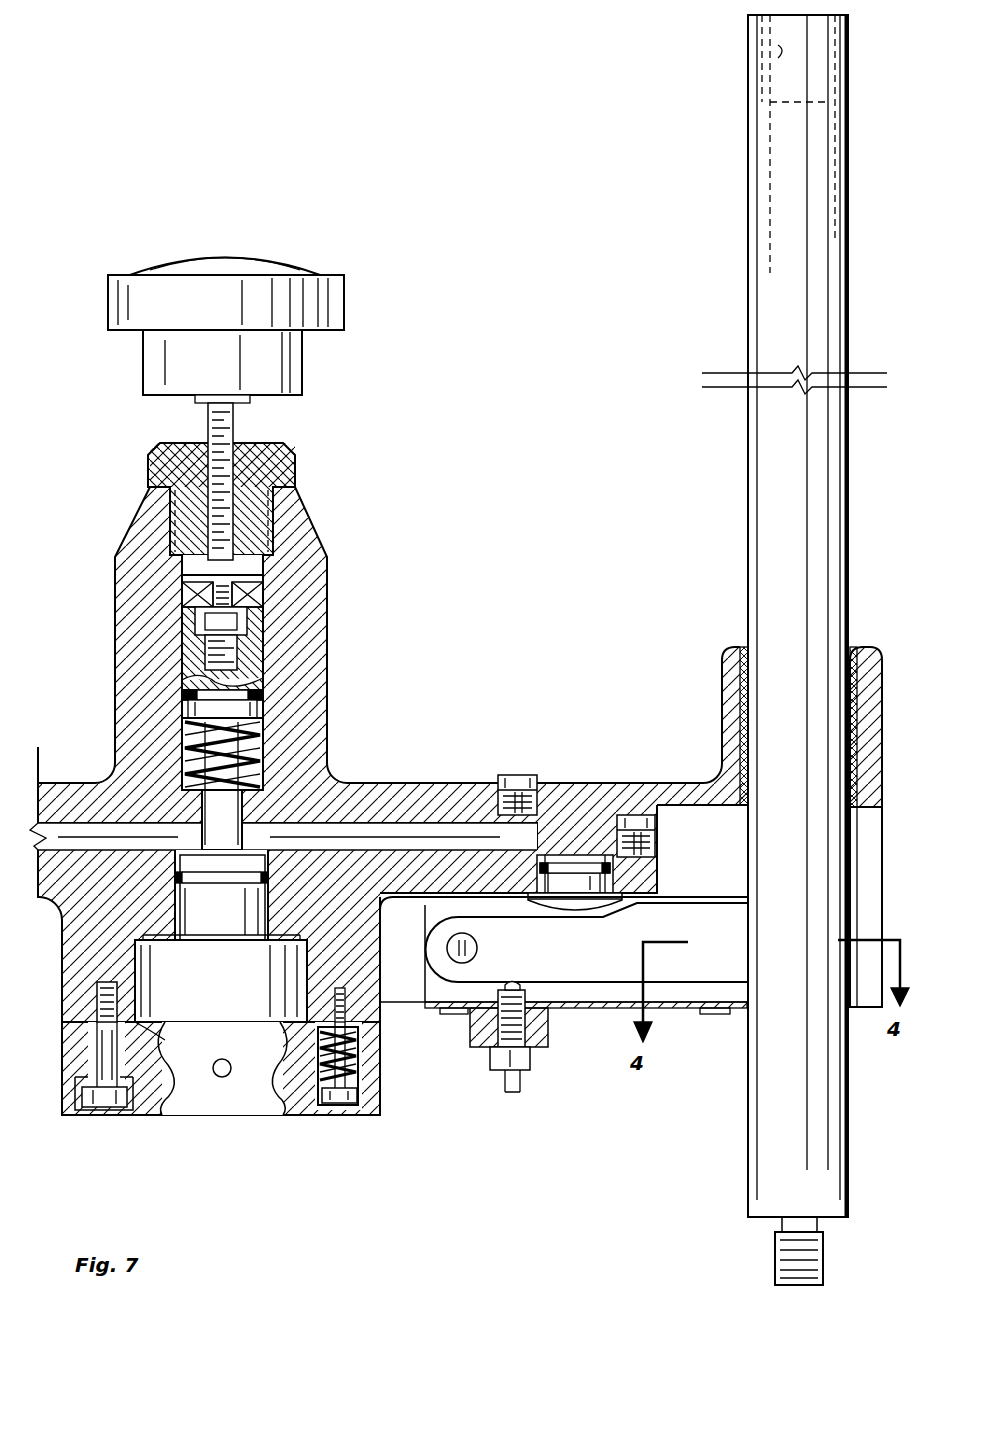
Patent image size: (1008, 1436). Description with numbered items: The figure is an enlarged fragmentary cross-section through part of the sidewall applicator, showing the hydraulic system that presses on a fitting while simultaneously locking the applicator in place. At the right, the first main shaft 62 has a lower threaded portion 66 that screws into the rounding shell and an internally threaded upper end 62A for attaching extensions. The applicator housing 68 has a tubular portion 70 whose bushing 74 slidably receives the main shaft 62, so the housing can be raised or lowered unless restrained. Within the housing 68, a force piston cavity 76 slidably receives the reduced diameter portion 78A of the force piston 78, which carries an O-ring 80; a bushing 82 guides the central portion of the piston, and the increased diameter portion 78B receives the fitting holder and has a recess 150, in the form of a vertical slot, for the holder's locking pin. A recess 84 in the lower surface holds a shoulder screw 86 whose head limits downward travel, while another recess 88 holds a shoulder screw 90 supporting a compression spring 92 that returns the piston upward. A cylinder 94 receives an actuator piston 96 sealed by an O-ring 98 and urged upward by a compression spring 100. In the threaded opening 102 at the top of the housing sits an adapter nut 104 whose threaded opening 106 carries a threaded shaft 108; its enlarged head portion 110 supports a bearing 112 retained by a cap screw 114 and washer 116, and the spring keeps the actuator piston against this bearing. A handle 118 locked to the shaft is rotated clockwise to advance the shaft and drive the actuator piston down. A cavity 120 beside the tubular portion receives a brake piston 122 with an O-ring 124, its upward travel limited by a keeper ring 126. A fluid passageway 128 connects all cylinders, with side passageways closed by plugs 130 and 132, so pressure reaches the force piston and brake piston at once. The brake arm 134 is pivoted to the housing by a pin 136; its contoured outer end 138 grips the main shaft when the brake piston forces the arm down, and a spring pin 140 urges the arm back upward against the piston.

The first main shaft 62 is at (768, 290).
The internally threaded upper end 62A is at (765, 45).
The lower threaded portion 66 is at (782, 1268).
The applicator housing 68 is at (415, 790).
The tubular portion 70 is at (730, 700).
The bushing 74 is at (742, 650).
The force piston cavity 76 is at (165, 925).
The force piston 78 is at (225, 1005).
The reduced diameter portion 78A is at (200, 935).
The increased diameter portion 78B is at (383, 1120).
The O-ring 80 is at (192, 880).
The bushing 82 is at (160, 962).
The recess 84 is at (85, 1108).
The shoulder screw 86 is at (102, 1060).
The recess 88 is at (348, 1092).
The shoulder screw 90 is at (330, 1106).
The compression spring 92 is at (362, 1047).
The cylinder 94 is at (195, 737).
The actuator piston 96 is at (268, 642).
The O-ring 98 is at (268, 700).
The compression spring 100 is at (195, 772).
The threaded opening 102 is at (258, 515).
The adapter nut 104 is at (150, 455).
The threaded opening 106 is at (237, 466).
The threaded shaft 108 is at (232, 425).
The enlarged head portion 110 is at (190, 567).
The bearing 112 is at (185, 598).
The cap screw 114 is at (208, 645).
The washer 116 is at (205, 617).
The handle 118 is at (255, 285).
The cavity 120 is at (562, 893).
The brake piston 122 is at (598, 882).
The O-ring 124 is at (556, 863).
The keeper ring 126 is at (548, 897).
The fluid passageway 128 is at (335, 835).
The plug 130 is at (520, 773).
The plug 132 is at (640, 830).
The brake arm 134 is at (620, 967).
The pin 136 is at (462, 962).
The outer end 138 is at (775, 985).
The spring pin 140 is at (515, 988).
The recess 150 is at (222, 1078).